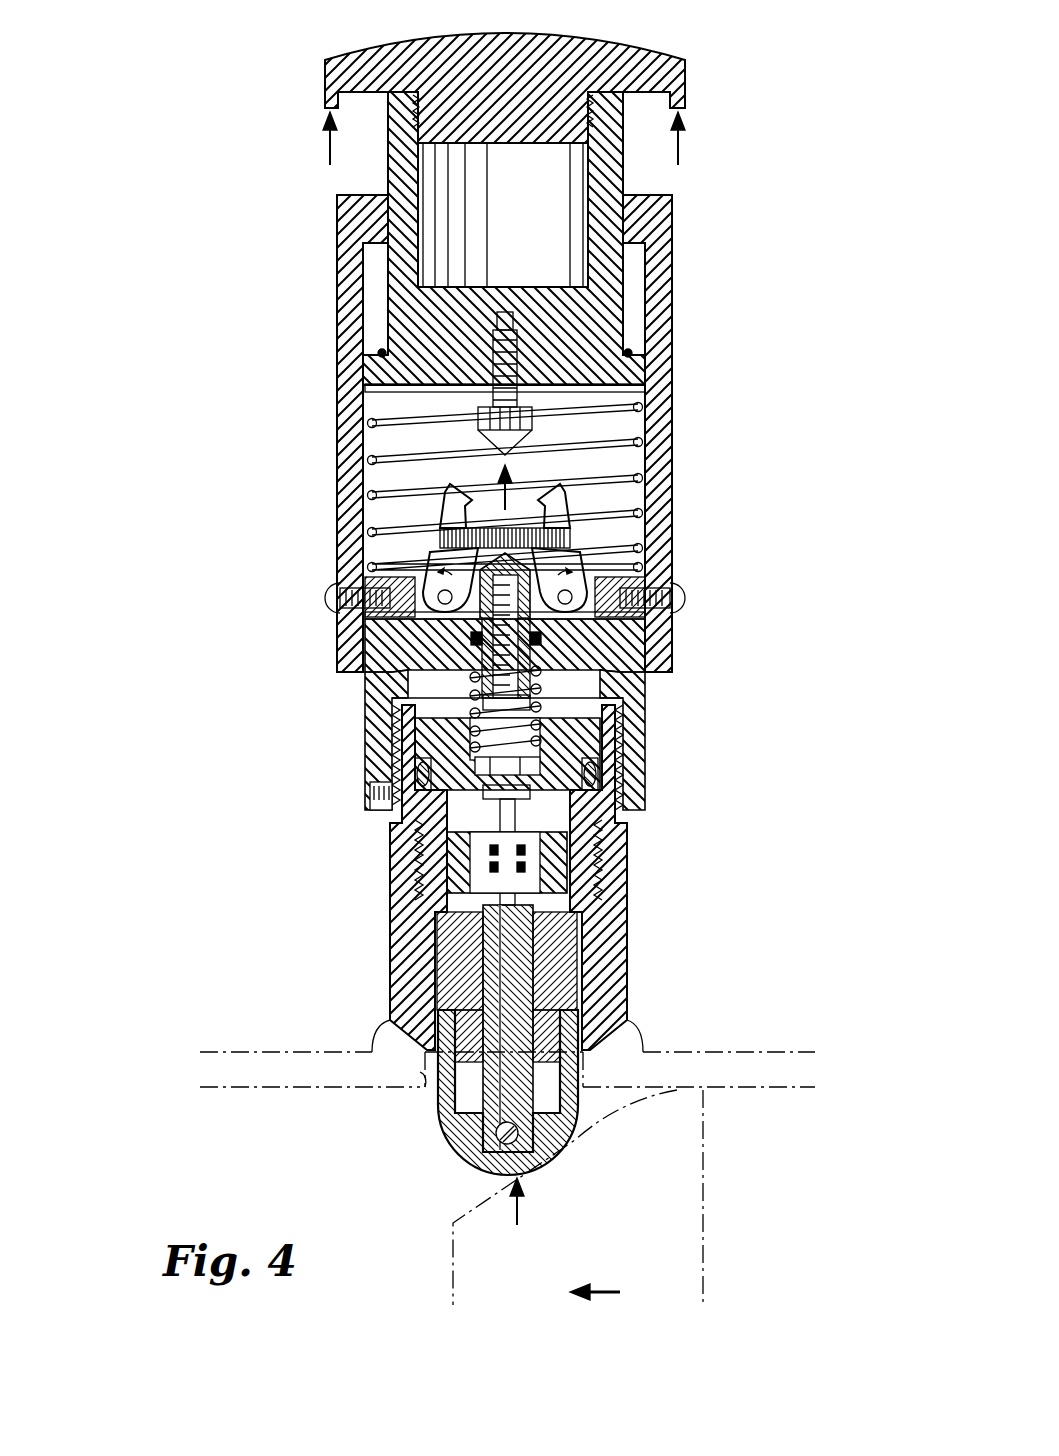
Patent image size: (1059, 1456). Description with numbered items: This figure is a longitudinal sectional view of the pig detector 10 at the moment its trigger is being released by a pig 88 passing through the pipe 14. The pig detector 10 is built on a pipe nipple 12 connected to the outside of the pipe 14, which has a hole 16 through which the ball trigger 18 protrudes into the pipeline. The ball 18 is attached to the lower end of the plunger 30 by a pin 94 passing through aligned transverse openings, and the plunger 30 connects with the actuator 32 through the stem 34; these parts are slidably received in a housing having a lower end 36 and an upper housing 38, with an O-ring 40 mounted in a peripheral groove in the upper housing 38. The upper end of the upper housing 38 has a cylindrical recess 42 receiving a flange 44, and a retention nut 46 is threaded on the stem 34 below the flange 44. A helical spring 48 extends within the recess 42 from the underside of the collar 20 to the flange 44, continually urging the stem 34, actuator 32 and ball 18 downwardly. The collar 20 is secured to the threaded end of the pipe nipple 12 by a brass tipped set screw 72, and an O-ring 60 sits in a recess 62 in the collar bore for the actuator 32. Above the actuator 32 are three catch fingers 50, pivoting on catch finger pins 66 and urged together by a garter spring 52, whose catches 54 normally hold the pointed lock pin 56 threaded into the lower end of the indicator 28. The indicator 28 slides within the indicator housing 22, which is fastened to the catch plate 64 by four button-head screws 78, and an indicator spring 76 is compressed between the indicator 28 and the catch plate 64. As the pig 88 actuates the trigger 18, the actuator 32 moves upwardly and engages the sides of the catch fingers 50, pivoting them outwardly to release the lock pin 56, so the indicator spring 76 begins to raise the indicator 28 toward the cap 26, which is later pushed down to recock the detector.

The pig detector 10 is at (247, 360).
The pipe nipple 12 is at (615, 930).
The pipe 14 is at (748, 1052).
The hole 16 is at (425, 1082).
The ball (trigger) 18 is at (500, 1160).
The collar 20 is at (375, 735).
The indicator housing 22 is at (680, 315).
The cap 26 is at (372, 57).
The indicator 28 is at (390, 175).
The plunger 30 is at (505, 1100).
The actuator 32 is at (365, 660).
The stem 34 is at (565, 846).
The lower end of housing 36 is at (545, 1005).
The upper housing 38 is at (600, 742).
The O-ring 40 is at (545, 770).
The cylindrical recess 42 is at (440, 748).
The flange 44 is at (598, 776).
The retention nut 46 is at (495, 788).
The helical spring 48 is at (542, 686).
The catch fingers 50 is at (420, 565).
The garter spring 52 is at (580, 540).
The catches 54 is at (465, 520).
The pointed lock pin 56 is at (655, 440).
The O-ring 60 is at (542, 640).
The recess 62 is at (485, 622).
The catch plate 64 is at (640, 625).
The catch finger pins 66 is at (365, 620).
The set screw 72 is at (378, 796).
The indicator spring 76 is at (385, 500).
The button-head screws 78 is at (330, 600).
The pig 88 is at (703, 1200).
The pin 94 is at (498, 1140).